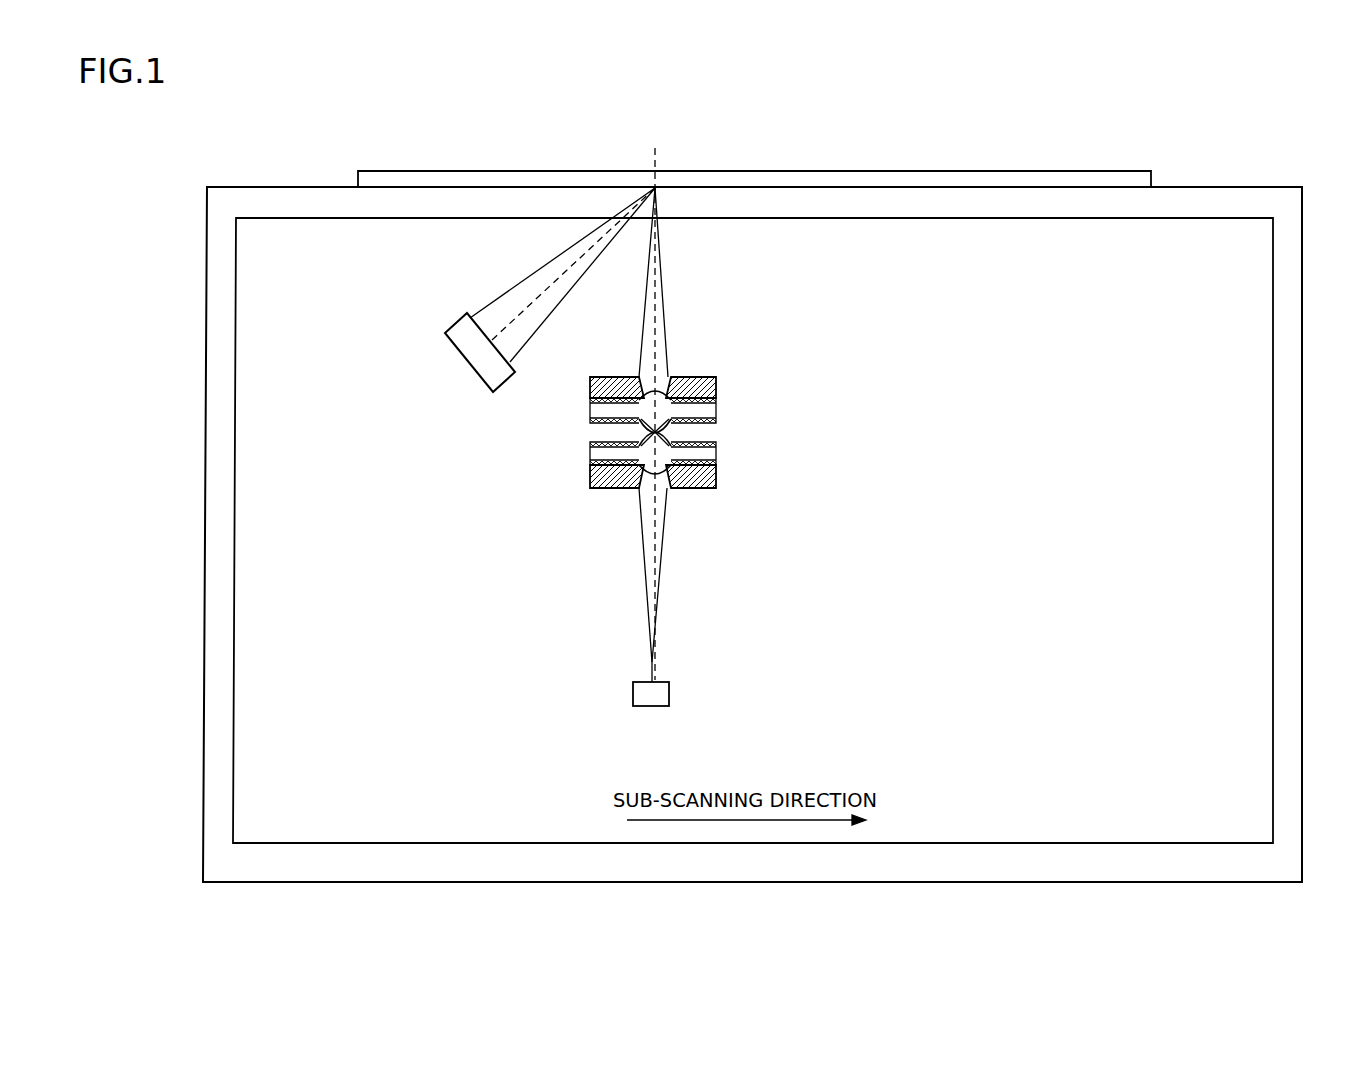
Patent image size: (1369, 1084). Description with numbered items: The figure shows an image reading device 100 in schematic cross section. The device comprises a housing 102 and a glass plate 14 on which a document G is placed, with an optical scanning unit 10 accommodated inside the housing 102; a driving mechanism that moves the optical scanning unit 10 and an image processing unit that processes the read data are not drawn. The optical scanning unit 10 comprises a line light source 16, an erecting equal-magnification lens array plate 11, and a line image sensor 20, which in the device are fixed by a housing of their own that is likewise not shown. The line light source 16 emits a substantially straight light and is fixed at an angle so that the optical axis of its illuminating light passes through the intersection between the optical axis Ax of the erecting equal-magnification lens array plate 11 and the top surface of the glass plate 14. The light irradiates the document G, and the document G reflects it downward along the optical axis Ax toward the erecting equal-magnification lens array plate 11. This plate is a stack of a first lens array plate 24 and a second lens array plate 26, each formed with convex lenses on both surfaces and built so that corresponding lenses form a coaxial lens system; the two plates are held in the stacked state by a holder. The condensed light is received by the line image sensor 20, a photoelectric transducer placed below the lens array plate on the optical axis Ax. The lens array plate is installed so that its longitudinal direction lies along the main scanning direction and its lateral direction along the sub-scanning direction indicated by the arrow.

The image reading device 100 is at (1214, 128).
The housing 102 is at (1302, 366).
The glass plate 14 is at (322, 200).
The document G is at (443, 172).
The optical axis Ax is at (653, 401).
The optical scanning unit 10 is at (777, 328).
The erecting equal-magnification lens array plate 11 is at (698, 371).
The line light source 16 is at (465, 362).
The first lens array plate 24 is at (716, 405).
The second lens array plate 26 is at (716, 449).
The line image sensor 20 is at (670, 694).